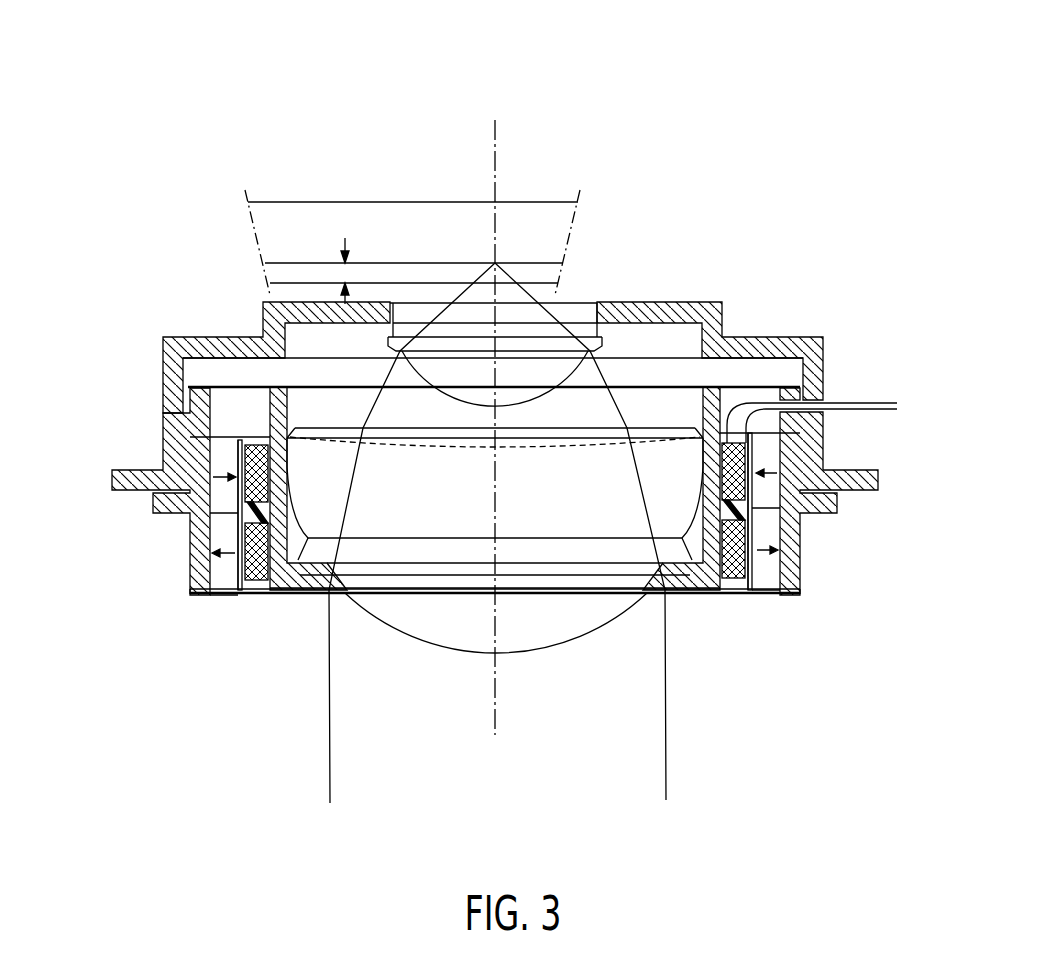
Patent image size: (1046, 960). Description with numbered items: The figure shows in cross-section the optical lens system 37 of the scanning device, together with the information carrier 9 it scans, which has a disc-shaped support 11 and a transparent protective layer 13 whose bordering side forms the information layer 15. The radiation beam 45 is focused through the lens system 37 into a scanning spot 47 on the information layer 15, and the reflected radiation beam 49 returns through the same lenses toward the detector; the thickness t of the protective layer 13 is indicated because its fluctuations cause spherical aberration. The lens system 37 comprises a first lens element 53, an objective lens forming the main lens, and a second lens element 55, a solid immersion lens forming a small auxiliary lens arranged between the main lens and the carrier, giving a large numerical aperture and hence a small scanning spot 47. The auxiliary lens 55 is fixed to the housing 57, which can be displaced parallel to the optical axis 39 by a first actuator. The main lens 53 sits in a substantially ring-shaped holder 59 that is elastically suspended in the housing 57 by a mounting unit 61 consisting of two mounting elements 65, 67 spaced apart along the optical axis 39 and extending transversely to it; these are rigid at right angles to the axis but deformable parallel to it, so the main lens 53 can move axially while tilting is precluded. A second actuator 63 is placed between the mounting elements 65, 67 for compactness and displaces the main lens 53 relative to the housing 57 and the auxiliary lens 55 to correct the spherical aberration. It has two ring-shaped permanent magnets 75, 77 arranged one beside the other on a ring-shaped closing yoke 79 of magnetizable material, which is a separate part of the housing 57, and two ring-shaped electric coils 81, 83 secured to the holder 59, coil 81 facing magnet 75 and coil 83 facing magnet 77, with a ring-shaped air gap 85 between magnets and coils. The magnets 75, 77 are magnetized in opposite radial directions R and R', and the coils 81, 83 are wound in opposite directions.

The information carrier 9 is at (323, 112).
The disc-shaped support 11 is at (435, 210).
The transparent protective layer 13 is at (278, 271).
The information layer 15 is at (305, 258).
The optical lens system 37 is at (203, 790).
The optical axis 39 is at (500, 712).
The radiation beam 45 is at (552, 533).
The scanning spot 47 is at (495, 263).
The reflected radiation beam 49 is at (667, 753).
The first lens element 53 is at (427, 632).
The second lens element 55 is at (583, 312).
The housing 57 is at (464, 334).
The holder 59 is at (717, 580).
The mounting unit 61 is at (493, 504).
The second actuator 63 is at (151, 563).
The mounting element 65 is at (655, 386).
The mounting element 67 is at (247, 597).
The permanent magnet 75 is at (218, 452).
The permanent magnet 77 is at (222, 583).
The closing yoke 79 is at (197, 527).
The electric coil 81 is at (265, 473).
The electric coil 83 is at (268, 537).
The air gap 85 is at (237, 470).